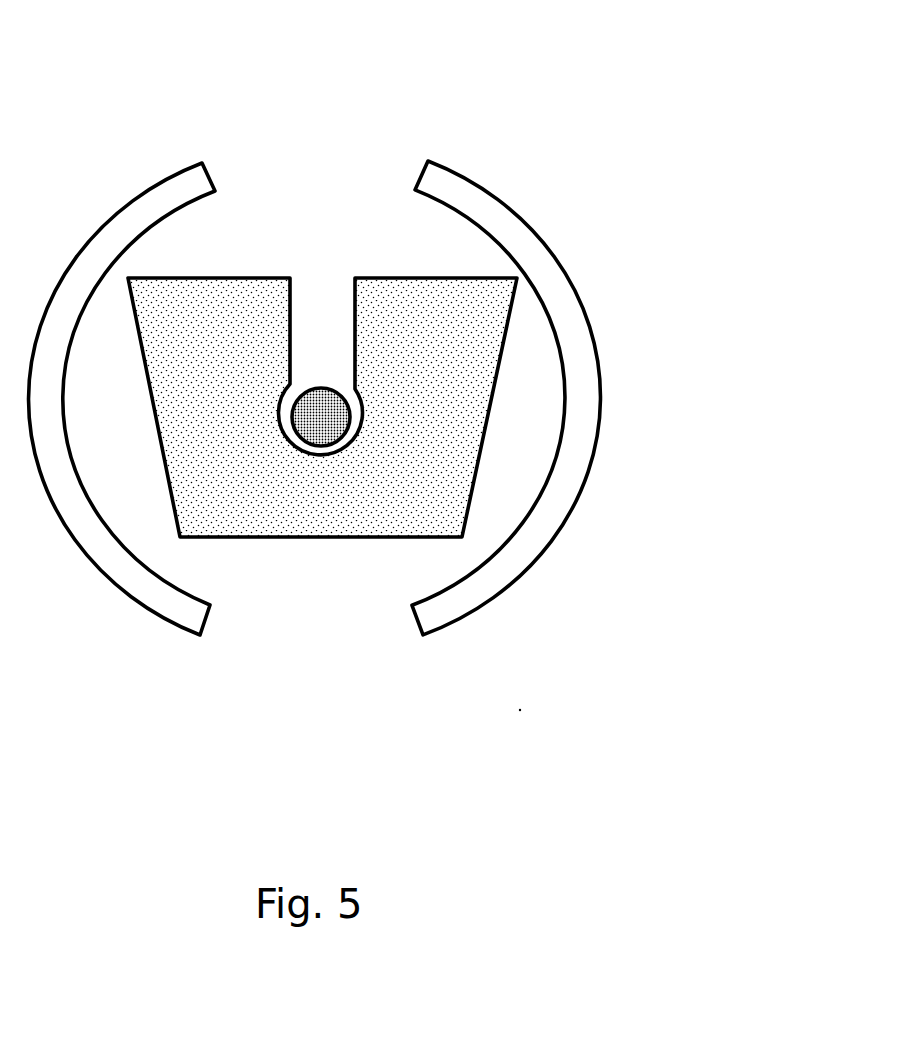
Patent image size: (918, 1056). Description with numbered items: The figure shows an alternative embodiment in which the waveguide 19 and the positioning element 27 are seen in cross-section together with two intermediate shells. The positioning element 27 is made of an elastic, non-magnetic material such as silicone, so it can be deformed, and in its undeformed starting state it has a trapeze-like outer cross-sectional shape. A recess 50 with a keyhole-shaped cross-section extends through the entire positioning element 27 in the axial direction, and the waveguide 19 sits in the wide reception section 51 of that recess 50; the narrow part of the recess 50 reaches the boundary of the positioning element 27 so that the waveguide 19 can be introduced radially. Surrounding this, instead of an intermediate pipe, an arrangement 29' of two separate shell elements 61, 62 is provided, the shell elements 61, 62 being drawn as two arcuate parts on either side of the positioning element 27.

The shell element 61 is at (108, 242).
The shell element 62 is at (483, 206).
The positioning element 27 is at (340, 500).
The waveguide 19 is at (317, 417).
The recess 50 is at (322, 362).
The reception section 51 is at (355, 412).
The arrangement 29' is at (492, 95).